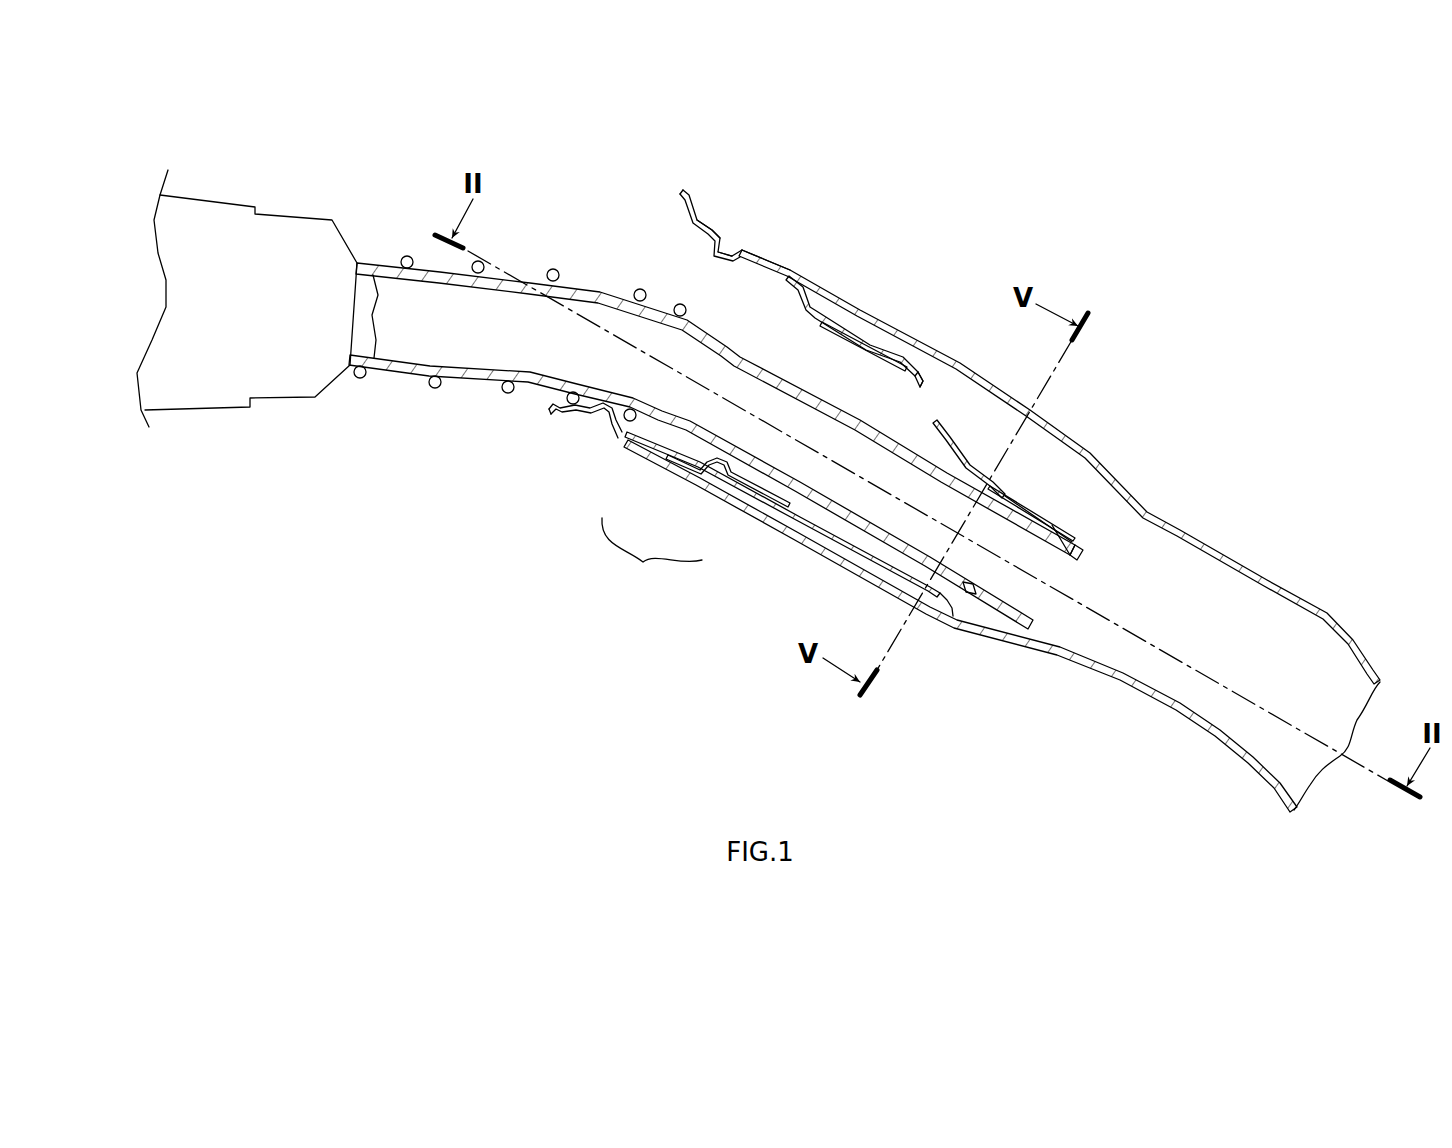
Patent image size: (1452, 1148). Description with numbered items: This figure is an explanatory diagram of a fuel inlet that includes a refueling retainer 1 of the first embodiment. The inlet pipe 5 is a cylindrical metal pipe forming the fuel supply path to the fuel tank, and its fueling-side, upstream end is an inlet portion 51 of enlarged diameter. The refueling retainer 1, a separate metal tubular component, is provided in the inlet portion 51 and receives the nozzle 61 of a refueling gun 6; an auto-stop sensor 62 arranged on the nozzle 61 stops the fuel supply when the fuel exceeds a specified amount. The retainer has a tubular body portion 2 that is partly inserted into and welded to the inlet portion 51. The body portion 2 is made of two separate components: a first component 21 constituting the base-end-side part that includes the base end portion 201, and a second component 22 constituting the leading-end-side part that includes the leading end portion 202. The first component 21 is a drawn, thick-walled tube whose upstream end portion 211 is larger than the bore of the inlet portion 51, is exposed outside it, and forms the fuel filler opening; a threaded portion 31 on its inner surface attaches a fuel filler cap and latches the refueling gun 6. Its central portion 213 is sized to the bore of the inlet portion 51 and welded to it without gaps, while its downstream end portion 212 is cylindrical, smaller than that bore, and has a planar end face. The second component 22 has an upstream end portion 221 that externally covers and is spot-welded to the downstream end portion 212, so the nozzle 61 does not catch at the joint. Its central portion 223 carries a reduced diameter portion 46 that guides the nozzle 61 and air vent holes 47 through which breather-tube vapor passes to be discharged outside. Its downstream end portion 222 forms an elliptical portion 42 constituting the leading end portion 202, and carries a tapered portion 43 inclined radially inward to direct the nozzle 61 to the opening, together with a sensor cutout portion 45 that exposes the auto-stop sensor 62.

The refueling retainer 1 is at (572, 418).
The body portion 2 is at (652, 557).
The inlet pipe 5 is at (1297, 582).
The refueling gun 6 is at (285, 243).
The first component 21 is at (660, 450).
The second component 22 is at (733, 498).
The threaded portion 31 is at (710, 260).
The elliptical portion 42 is at (1030, 500).
The tapered portion 43 is at (1008, 492).
The sensor cutout portion 45 is at (948, 600).
The reduced diameter portion 46 is at (957, 440).
The air vent hole 47 is at (921, 385).
The inlet portion 51 is at (797, 535).
The nozzle 61 is at (478, 387).
The auto-stop sensor 62 is at (970, 594).
The base end portion 201 is at (700, 197).
The leading end portion 202 is at (1080, 522).
The upstream end portion 211 is at (717, 230).
The downstream end portion 212 is at (843, 300).
The central portion 213 is at (767, 260).
The upstream end portion 221 is at (885, 318).
The downstream end portion 222 is at (1060, 517).
The central portion 223 is at (917, 347).